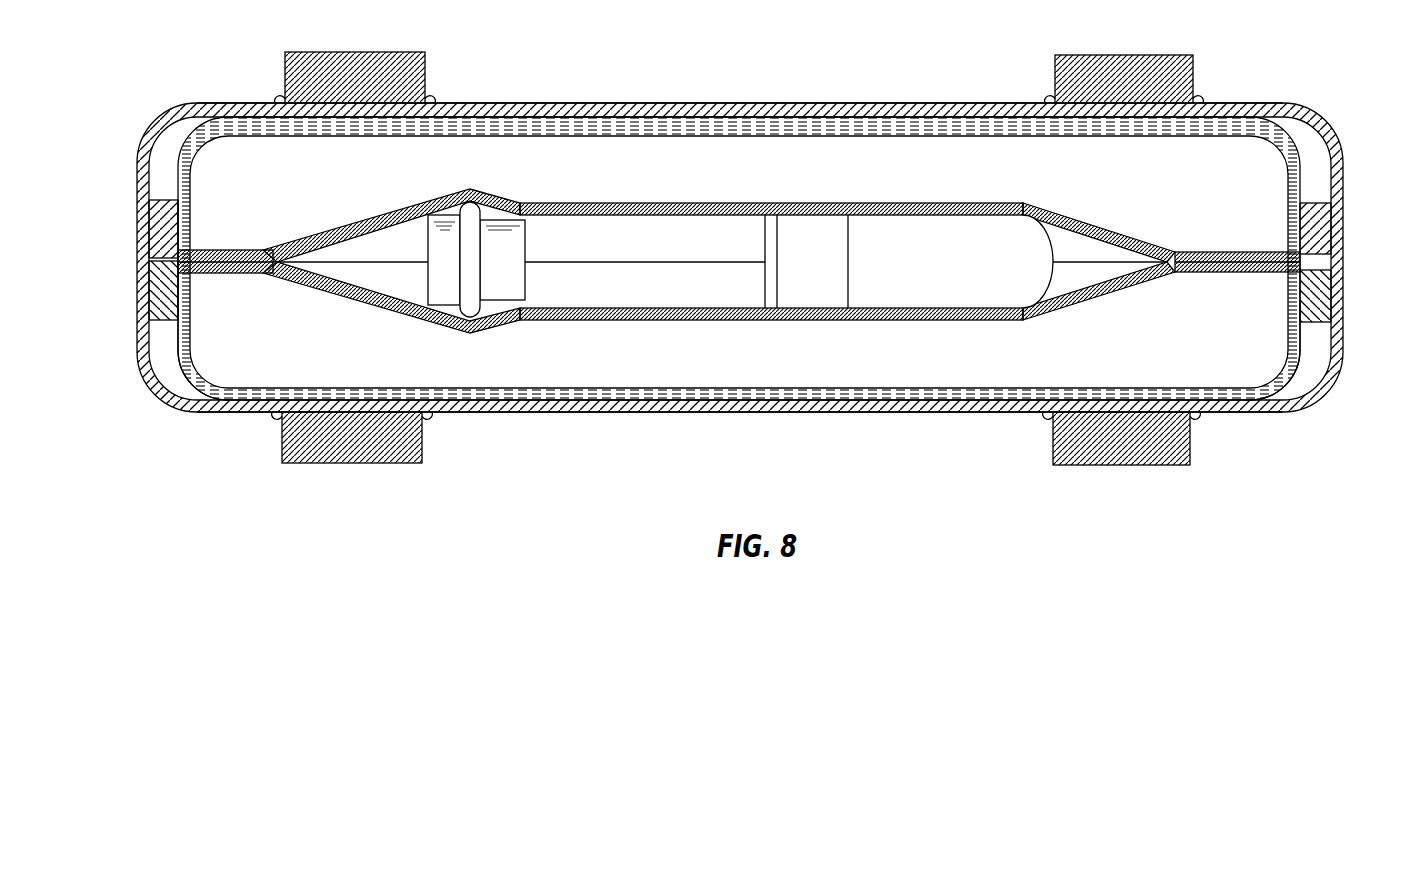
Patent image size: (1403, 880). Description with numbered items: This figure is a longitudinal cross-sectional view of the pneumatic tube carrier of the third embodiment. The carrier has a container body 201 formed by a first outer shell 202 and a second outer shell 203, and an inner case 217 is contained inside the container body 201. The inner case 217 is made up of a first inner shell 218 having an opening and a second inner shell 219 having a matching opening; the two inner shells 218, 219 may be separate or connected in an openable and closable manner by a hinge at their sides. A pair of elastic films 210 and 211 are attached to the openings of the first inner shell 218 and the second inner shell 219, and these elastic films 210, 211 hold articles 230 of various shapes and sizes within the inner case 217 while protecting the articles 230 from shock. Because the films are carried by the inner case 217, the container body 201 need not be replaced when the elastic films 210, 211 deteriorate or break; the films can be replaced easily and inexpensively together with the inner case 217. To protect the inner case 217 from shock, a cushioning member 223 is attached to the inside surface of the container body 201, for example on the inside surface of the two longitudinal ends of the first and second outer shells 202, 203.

The container body 201 is at (855, 103).
The first outer shell 202 is at (615, 413).
The second outer shell 203 is at (610, 103).
The elastic film 210 is at (697, 320).
The elastic film 211 is at (793, 203).
The inner case 217 is at (1293, 377).
The first inner shell 218 is at (177, 343).
The second inner shell 219 is at (178, 178).
The cushioning member 223 is at (167, 232).
The articles 230 is at (633, 297).